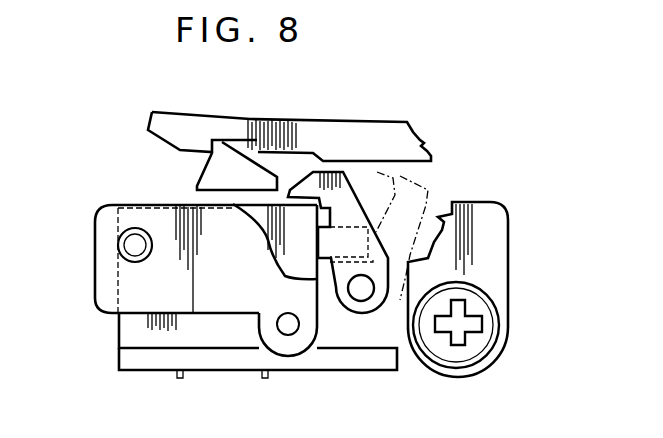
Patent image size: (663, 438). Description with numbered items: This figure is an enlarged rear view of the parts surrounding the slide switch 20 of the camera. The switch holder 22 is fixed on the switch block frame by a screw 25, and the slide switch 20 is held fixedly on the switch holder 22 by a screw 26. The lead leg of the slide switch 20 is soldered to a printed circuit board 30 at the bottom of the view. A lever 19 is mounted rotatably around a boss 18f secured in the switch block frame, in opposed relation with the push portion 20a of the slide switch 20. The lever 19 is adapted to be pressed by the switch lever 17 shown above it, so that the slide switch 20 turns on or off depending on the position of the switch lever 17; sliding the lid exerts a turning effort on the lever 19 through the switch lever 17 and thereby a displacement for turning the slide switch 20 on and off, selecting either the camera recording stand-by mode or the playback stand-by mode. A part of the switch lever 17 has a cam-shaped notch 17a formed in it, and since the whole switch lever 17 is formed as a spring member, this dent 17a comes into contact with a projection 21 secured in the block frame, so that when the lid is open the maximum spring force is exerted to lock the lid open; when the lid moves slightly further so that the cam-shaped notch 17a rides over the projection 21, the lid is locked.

The switch lever 17 is at (153, 123).
The cam-shaped notch 17a is at (229, 128).
The lever 19 is at (333, 187).
The projection 21 is at (203, 166).
The switch holder 22 is at (105, 222).
The screw 26 is at (133, 242).
The slide switch 20 is at (284, 250).
The push portion 20a is at (321, 258).
The boss 18f is at (360, 292).
The screw 25 is at (480, 338).
The printed circuit board 30 is at (222, 360).